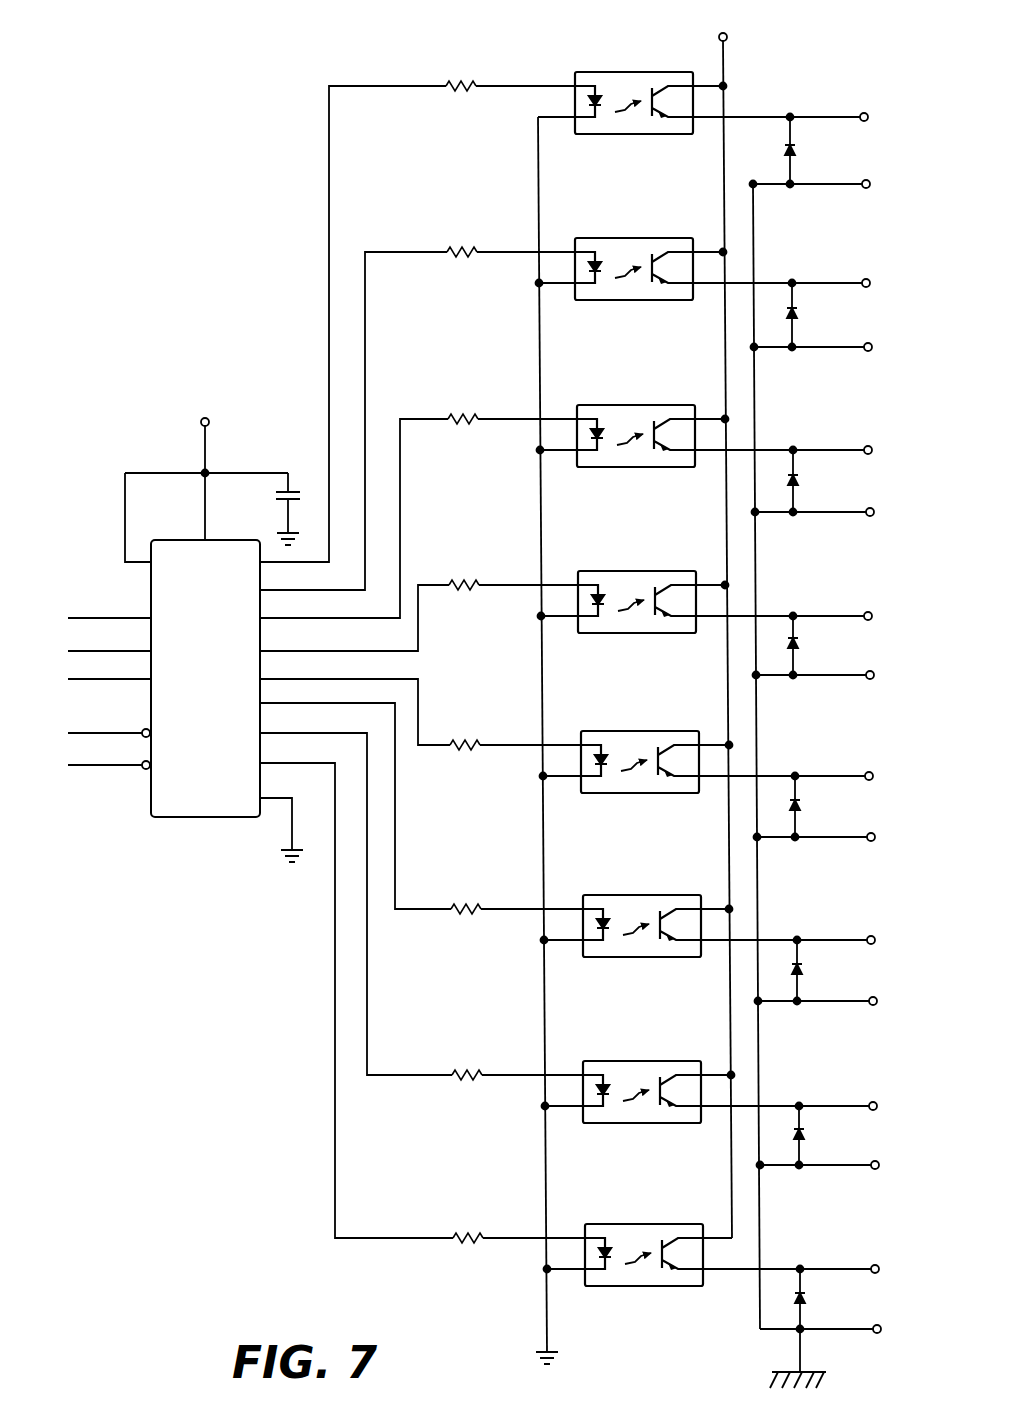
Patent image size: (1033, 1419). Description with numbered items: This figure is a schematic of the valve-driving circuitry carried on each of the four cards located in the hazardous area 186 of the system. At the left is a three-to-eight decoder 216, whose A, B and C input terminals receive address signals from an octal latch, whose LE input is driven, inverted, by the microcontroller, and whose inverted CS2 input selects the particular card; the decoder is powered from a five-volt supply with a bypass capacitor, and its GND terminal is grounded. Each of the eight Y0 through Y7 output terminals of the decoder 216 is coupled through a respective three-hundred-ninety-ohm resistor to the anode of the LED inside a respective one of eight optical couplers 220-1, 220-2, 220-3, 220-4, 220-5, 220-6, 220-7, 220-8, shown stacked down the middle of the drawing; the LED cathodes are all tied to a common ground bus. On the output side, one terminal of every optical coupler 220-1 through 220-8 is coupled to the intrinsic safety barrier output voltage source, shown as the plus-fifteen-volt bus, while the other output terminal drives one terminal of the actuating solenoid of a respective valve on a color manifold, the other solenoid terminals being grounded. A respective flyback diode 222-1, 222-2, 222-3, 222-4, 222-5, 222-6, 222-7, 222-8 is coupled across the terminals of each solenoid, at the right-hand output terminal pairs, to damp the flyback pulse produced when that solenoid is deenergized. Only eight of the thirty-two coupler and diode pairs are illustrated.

The three-to-eight decoder 216 is at (158, 836).
The hazardous area 186 is at (203, 1070).
The optical coupler 220-1 is at (567, 71).
The optical coupler 220-2 is at (630, 233).
The optical coupler 220-3 is at (642, 400).
The optical coupler 220-4 is at (688, 518).
The optical coupler 220-5 is at (632, 727).
The optical coupler 220-6 is at (620, 889).
The optical coupler 220-7 is at (708, 1055).
The optical coupler 220-8 is at (662, 1170).
The flyback diode 222-1 is at (797, 147).
The flyback diode 222-2 is at (797, 307).
The flyback diode 222-3 is at (800, 472).
The flyback diode 222-4 is at (800, 634).
The flyback diode 222-5 is at (801, 798).
The flyback diode 222-6 is at (803, 963).
The flyback diode 222-7 is at (805, 1128).
The flyback diode 222-8 is at (806, 1293).